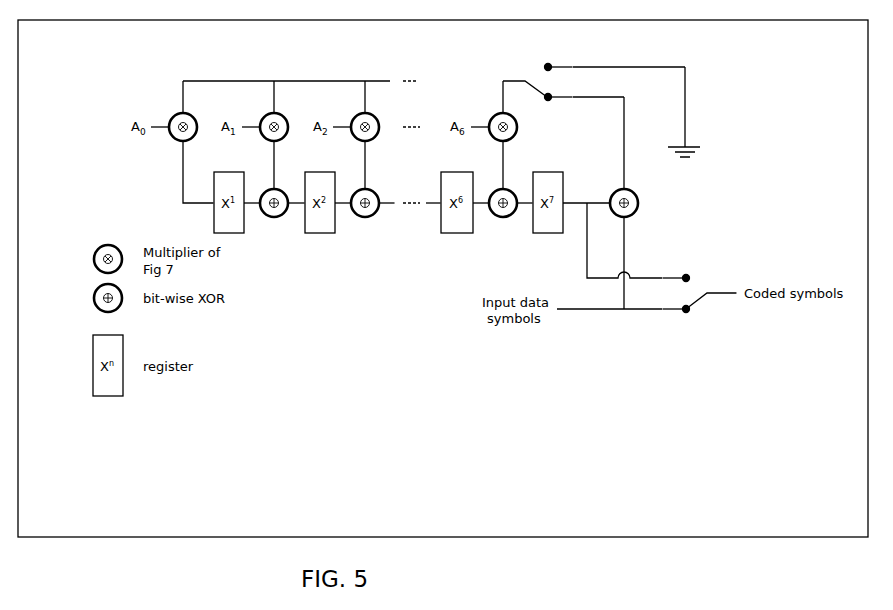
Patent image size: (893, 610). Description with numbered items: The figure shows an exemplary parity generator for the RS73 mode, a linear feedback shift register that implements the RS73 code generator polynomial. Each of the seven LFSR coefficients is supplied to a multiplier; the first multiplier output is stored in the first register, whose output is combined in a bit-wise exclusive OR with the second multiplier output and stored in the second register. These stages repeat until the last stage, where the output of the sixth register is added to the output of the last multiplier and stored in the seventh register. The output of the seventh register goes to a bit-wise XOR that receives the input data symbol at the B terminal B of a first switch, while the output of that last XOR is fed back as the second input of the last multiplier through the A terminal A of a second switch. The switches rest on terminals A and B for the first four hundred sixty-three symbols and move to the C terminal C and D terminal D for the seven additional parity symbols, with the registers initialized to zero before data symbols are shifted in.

The A terminal of second switch A is at (585, 141).
The B terminal of first switch B is at (623, 320).
The C terminal of second switch C is at (623, 101).
The D terminal of first switch D is at (638, 242).